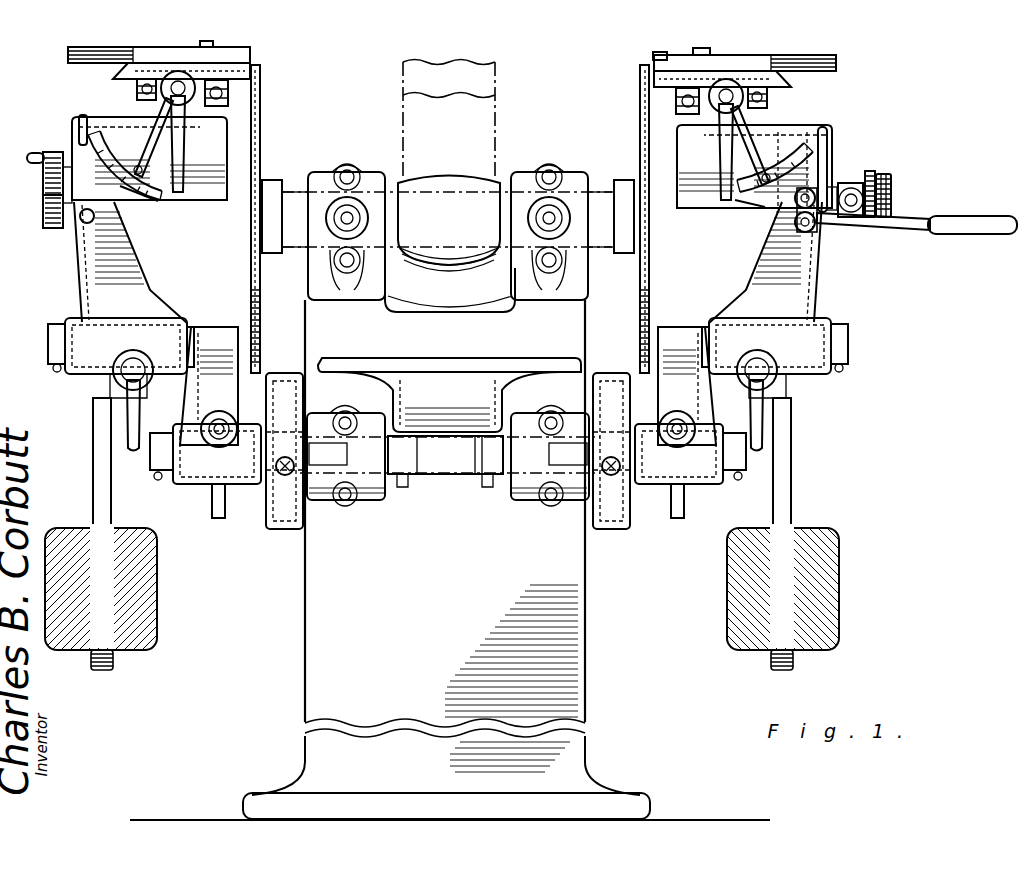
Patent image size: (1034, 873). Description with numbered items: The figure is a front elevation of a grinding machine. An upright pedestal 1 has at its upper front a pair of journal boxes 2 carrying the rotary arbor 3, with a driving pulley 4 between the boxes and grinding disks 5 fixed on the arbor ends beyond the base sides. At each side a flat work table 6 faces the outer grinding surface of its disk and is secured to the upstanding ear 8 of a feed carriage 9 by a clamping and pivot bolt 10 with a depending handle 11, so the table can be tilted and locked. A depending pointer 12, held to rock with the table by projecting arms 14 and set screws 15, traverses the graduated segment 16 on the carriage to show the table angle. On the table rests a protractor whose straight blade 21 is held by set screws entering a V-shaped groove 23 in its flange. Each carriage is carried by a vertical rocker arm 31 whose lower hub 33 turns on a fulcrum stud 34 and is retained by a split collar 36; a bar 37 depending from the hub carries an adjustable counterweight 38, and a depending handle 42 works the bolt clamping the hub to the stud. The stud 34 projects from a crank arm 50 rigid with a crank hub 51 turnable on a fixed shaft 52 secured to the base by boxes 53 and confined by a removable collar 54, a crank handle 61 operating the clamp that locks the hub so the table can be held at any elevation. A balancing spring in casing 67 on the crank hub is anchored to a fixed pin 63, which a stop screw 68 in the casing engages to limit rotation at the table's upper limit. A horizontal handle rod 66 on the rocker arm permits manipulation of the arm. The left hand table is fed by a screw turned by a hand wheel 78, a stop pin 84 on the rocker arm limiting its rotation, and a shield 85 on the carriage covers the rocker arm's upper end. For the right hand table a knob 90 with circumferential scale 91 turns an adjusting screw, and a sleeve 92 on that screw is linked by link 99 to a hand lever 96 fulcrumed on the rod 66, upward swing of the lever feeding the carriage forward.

The base 1 is at (450, 560).
The journal boxes 2 is at (362, 172).
The arbor 3 is at (282, 198).
The driving pulley 4 is at (450, 186).
The grinding disks 5 is at (260, 300).
The work table 6 is at (250, 71).
The ear 8 is at (162, 100).
The table feed carriage 9 is at (222, 152).
The clamping and pivot bolt 10 is at (178, 72).
The handle 11 is at (186, 158).
The pointer 12 is at (158, 118).
The arms 14 is at (137, 83).
The set screws 15 is at (140, 93).
The segment 16 is at (138, 197).
The protractor blade 21 is at (252, 56).
The V-shaped groove 23 is at (215, 45).
The rocker arm 31 is at (448, 262).
The hub 33 is at (100, 360).
The fulcrum stud 34 is at (191, 326).
The split collar 36 is at (50, 345).
The bar 37 is at (92, 455).
The counterweight 38 is at (157, 582).
The handle 42 is at (141, 405).
The crank arm 50 is at (448, 386).
The crank hub 51 is at (238, 485).
The fixed shaft 52 is at (158, 470).
The boxes 53 is at (450, 458).
The collar 54 is at (200, 429).
The crank handle 61 is at (212, 505).
The pin 63 is at (340, 420).
The handle rod 66 is at (84, 222).
The spring casing 67 is at (290, 530).
The stop screw 68 is at (281, 474).
The hand wheel 78 is at (43, 212).
The stop pin 84 is at (50, 152).
The shield 85 is at (80, 116).
The knob 90 is at (893, 180).
The circumferential scale 91 is at (869, 174).
The sleeve 92 is at (815, 195).
The hand lever 96 is at (955, 233).
The link 99 is at (818, 215).